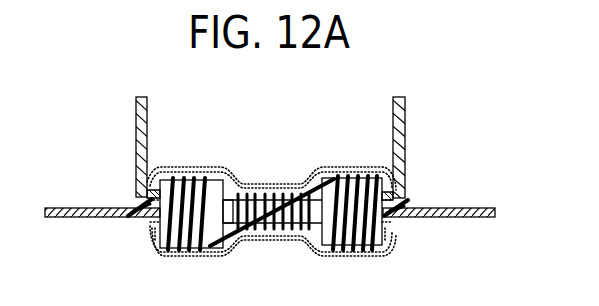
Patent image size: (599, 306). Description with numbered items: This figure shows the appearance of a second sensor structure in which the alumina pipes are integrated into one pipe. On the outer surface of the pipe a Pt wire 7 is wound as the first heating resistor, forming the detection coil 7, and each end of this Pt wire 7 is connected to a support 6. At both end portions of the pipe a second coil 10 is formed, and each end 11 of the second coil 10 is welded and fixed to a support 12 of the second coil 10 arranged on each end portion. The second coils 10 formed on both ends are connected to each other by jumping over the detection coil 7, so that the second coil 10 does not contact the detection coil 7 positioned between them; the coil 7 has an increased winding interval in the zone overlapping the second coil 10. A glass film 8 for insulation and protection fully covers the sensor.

The support 6 is at (406, 118).
The Pt wire (detection coil) 7 is at (276, 197).
The glass film 8 is at (247, 196).
The second coil 10 is at (183, 180).
The end of the second coil 11 is at (406, 206).
The support of the second coil 12 is at (428, 218).